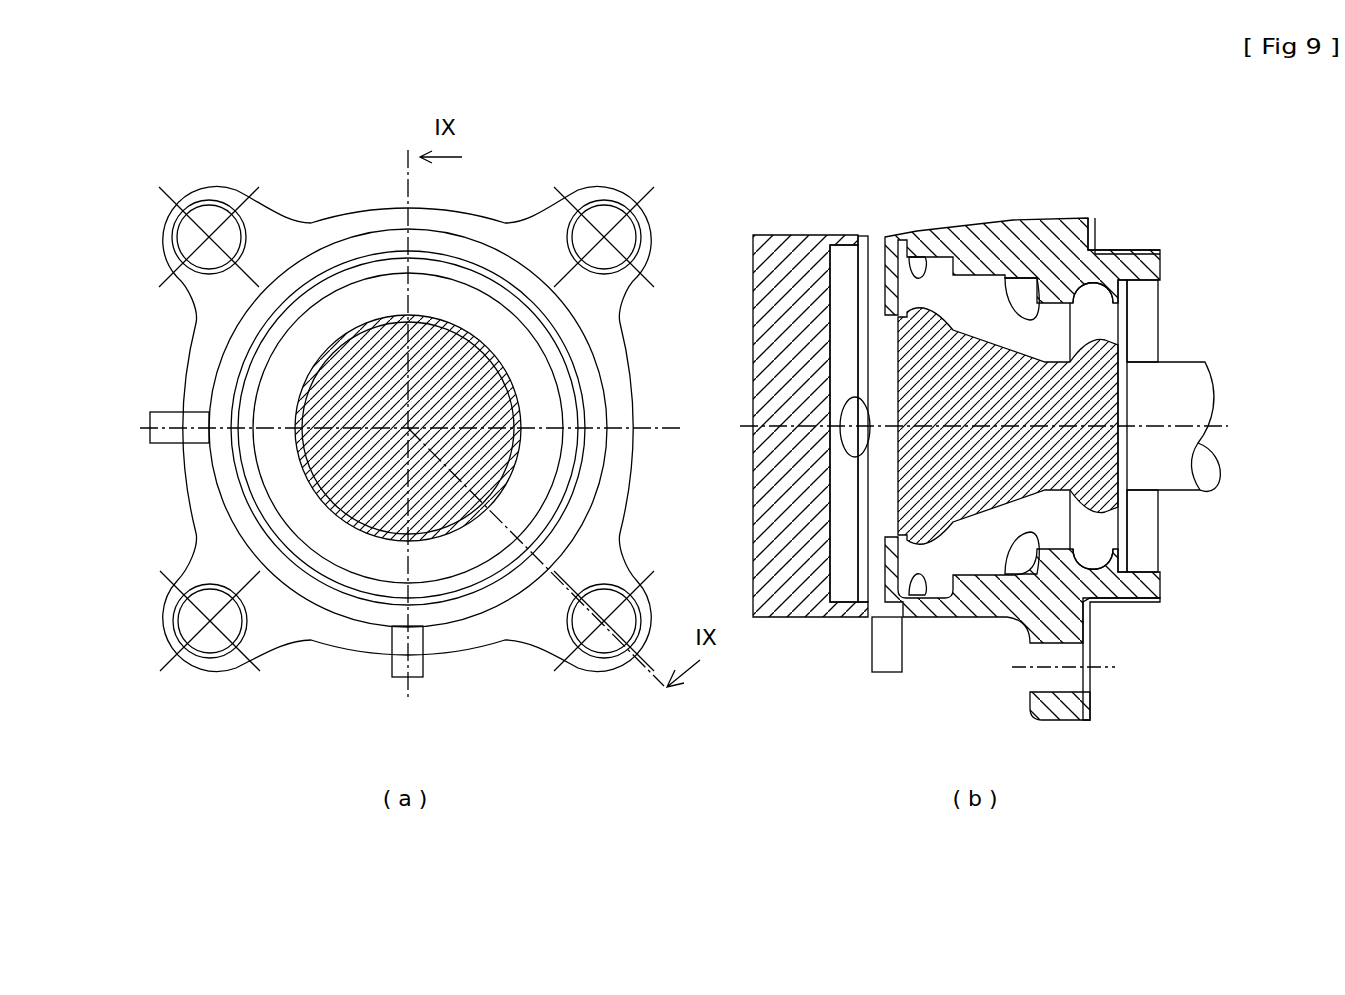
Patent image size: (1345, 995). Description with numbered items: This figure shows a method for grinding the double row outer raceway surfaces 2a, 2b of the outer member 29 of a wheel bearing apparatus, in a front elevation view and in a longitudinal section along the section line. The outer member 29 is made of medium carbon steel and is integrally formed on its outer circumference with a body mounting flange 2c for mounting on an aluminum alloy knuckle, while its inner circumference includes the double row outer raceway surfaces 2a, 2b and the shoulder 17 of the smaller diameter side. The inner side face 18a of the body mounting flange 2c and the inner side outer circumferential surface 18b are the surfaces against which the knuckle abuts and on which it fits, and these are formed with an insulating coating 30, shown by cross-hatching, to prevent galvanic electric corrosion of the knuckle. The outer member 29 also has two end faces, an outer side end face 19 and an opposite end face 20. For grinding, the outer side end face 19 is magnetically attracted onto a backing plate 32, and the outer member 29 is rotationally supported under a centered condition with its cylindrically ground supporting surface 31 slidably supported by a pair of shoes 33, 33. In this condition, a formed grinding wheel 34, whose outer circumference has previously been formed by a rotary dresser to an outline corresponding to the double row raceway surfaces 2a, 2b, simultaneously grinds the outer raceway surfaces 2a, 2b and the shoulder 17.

The outer raceway surface 2a is at (340, 296).
The outer raceway surface 2b is at (1100, 298).
The body mounting flange 2c is at (203, 193).
The shoulder 17 is at (1023, 320).
The inner side face 18a is at (1090, 698).
The inner side outer circumferential surface 18b is at (1137, 603).
The outer side end face 19 is at (577, 368).
The end face 20 is at (1163, 267).
The outer member 29 is at (365, 222).
The insulating coating 30 is at (1135, 250).
The supporting surface 31 is at (455, 250).
The backing plate 32 is at (787, 247).
The shoe 33 is at (150, 420).
The formed grinding wheel 34 is at (372, 380).